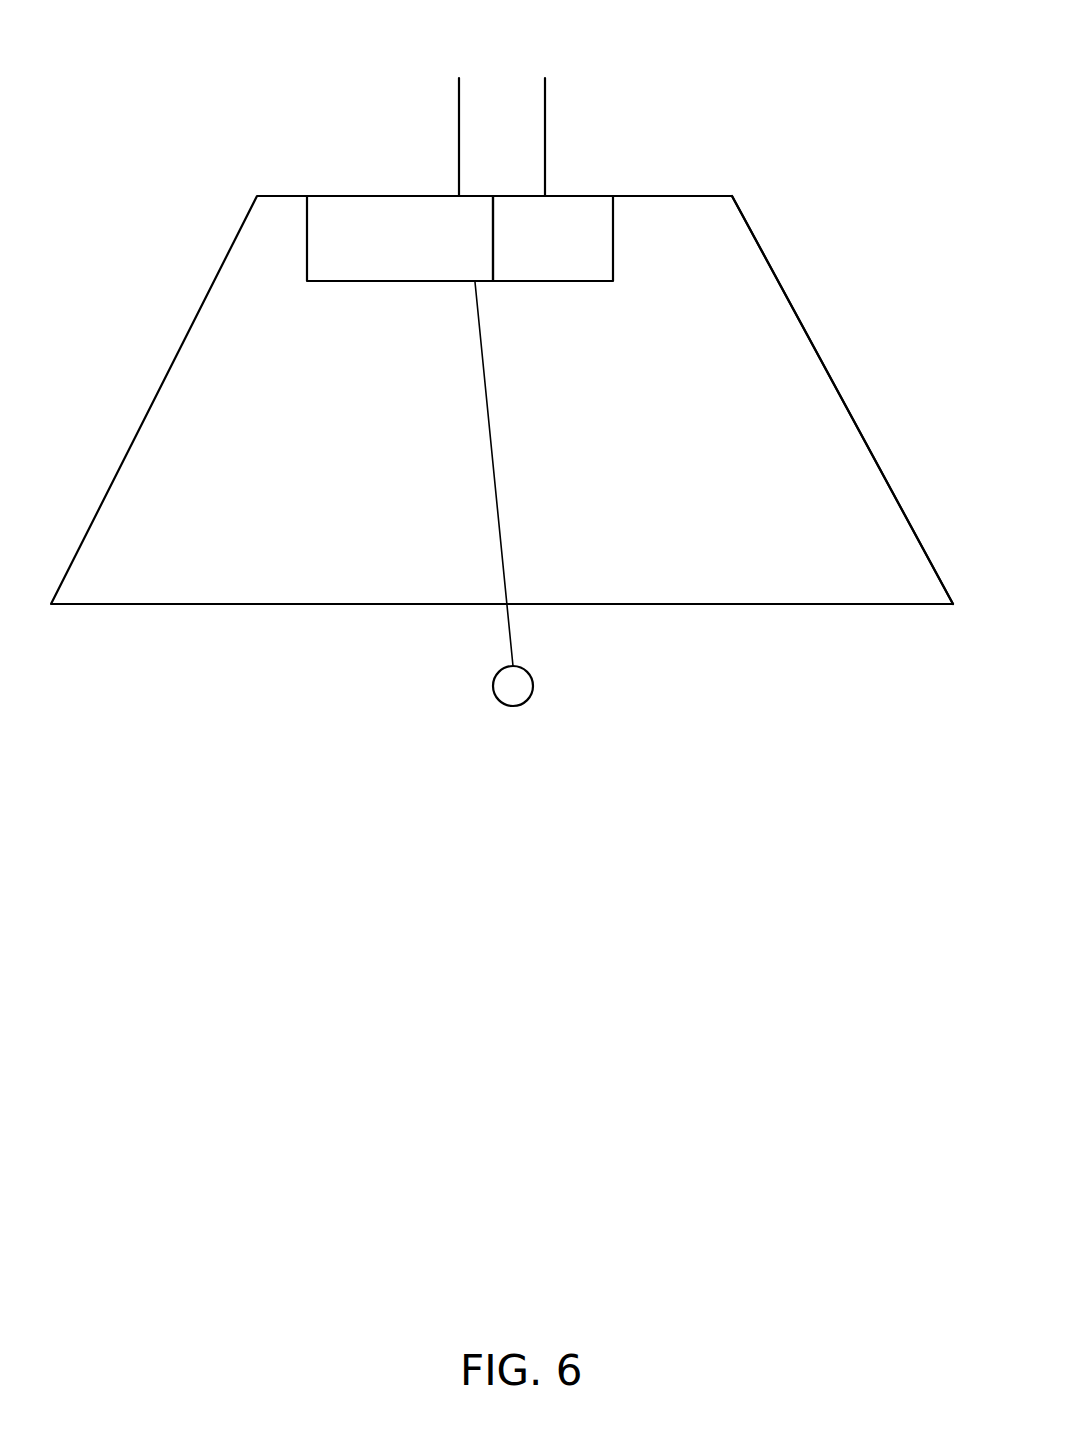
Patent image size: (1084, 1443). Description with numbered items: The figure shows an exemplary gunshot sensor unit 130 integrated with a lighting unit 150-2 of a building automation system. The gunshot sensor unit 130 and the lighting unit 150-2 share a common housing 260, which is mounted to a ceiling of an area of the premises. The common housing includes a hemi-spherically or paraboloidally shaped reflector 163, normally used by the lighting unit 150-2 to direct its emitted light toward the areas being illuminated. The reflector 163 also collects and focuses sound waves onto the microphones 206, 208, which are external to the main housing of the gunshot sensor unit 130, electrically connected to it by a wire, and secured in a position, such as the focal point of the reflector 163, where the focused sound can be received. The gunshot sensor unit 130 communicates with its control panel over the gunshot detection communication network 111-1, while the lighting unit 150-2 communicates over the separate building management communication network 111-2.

The common housing 260 is at (253, 185).
The reflector 163 is at (775, 272).
The gunshot detection communication network 111-1 is at (459, 128).
The building management communication network 111-2 is at (545, 145).
The gunshot sensor unit 130 is at (425, 262).
The lighting unit 150-2 is at (603, 262).
The microphone 206 is at (619, 494).
The microphone 208 is at (533, 686).